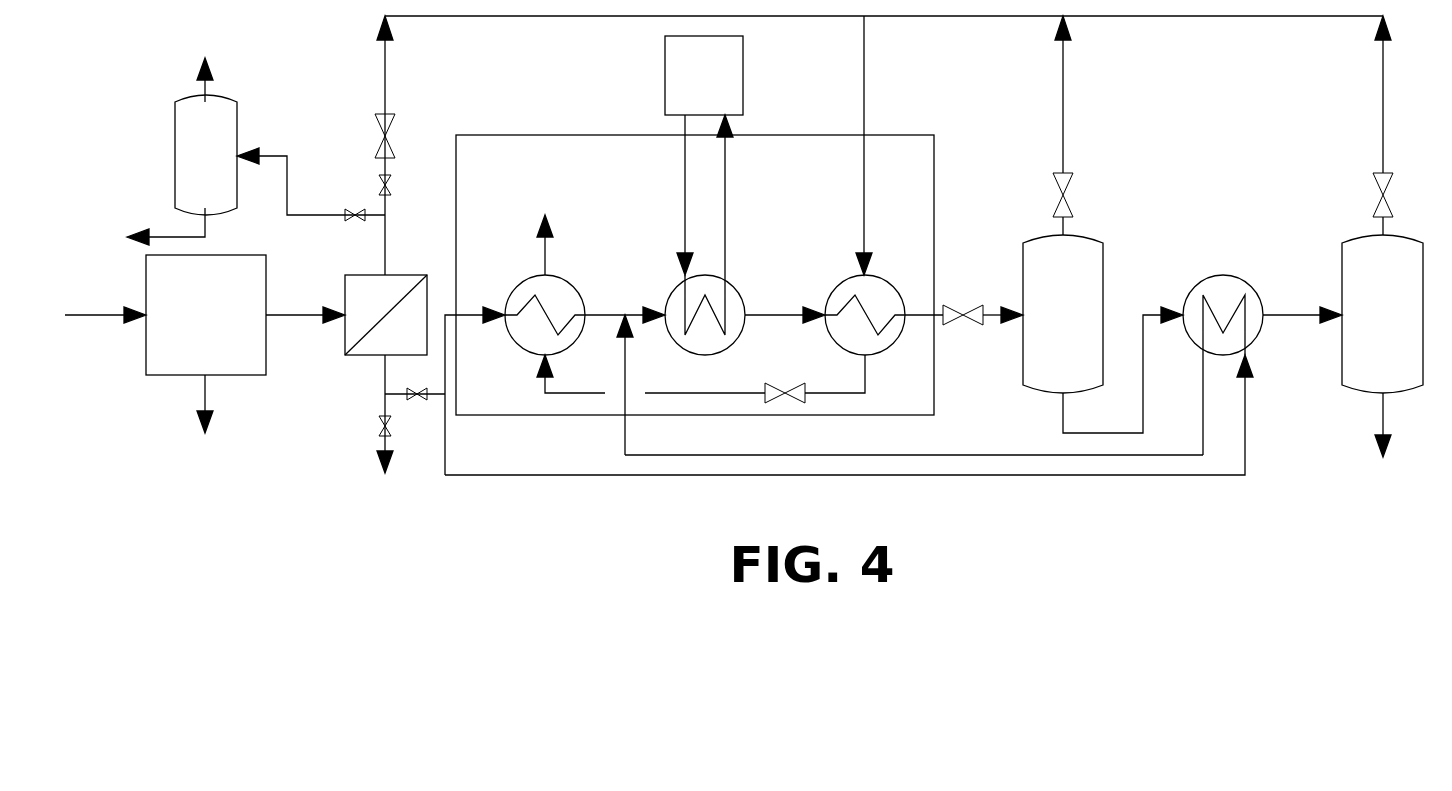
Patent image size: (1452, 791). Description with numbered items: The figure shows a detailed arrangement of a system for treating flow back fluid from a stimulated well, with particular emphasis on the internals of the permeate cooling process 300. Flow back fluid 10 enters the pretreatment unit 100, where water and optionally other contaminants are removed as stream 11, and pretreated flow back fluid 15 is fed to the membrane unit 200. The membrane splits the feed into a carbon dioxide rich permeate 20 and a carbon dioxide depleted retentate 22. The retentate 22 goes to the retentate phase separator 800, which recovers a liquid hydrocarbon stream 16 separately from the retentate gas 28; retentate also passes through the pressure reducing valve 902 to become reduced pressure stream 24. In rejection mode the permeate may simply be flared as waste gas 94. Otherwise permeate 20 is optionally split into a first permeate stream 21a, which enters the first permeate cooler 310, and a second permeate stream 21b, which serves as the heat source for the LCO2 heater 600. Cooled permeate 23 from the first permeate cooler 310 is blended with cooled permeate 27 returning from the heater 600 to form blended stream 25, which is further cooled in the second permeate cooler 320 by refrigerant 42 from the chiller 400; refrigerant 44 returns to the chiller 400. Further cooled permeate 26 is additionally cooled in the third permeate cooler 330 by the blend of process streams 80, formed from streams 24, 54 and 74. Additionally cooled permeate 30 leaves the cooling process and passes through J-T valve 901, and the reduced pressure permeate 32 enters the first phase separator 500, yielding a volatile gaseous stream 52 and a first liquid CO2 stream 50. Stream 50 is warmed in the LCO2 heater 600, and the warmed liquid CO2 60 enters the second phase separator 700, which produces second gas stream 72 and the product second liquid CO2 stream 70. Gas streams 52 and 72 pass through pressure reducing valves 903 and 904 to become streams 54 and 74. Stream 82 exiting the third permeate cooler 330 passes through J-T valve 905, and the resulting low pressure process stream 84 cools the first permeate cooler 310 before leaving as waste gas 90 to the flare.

The flow back fluid 10 is at (105, 303).
The contaminant stream 11 is at (188, 404).
The pretreated flow back fluid 15 is at (305, 303).
The liquid hydrocarbon stream 16 is at (166, 221).
The permeate 20 is at (397, 414).
The first permeate stream 21a is at (475, 379).
The second permeate stream 21b is at (870, 416).
The retentate 22 is at (367, 240).
The cooled permeate 23 is at (610, 385).
The reduced pressure retentate stream 24 is at (371, 111).
The blended cooled permeate 25 is at (625, 301).
The further cooled permeate 26 is at (785, 302).
The cooled permeate from LCO2 heater 27 is at (914, 440).
The retentate gas 28 is at (192, 73).
The additionally cooled permeate 30 is at (924, 334).
The reduced pressure permeate 32 is at (1003, 330).
The refrigerant 42 is at (670, 195).
The returned refrigerant 44 is at (737, 191).
The first liquid CO2 stream 50 is at (1123, 370).
The gaseous stream 52 is at (1086, 220).
The reduced pressure gas stream 54 is at (1079, 94).
The warmed liquid CO2 60 is at (1302, 326).
The second liquid CO2 stream 70 is at (1396, 425).
The second gas stream 72 is at (1410, 225).
The reduced pressure gas stream 74 is at (1406, 94).
The blend of process streams 80 is at (884, 145).
The process gas stream 82 is at (775, 380).
The low pressure process stream 84 is at (553, 374).
The waste gas 90 is at (561, 245).
The waste gas 94 is at (356, 453).
The pretreatment unit 100 is at (206, 315).
The membrane separation unit 200 is at (339, 357).
The permeate cooling process 300 is at (695, 275).
The first permeate cooler 310 is at (562, 310).
The second permeate cooler 320 is at (705, 249).
The third permeate cooler 330 is at (875, 305).
The chiller 400 is at (704, 75).
The first phase separator 500 is at (1063, 314).
The LCO2 heater 600 is at (1240, 333).
The second phase separator 700 is at (1382, 314).
The retentate phase separator 800 is at (280, 158).
The J-T valve 901 is at (963, 301).
The pressure reducing valve 902 is at (363, 136).
The pressure reducing valve 903 is at (1043, 195).
The pressure reducing valve 904 is at (1358, 195).
The J-T valve 905 is at (785, 382).